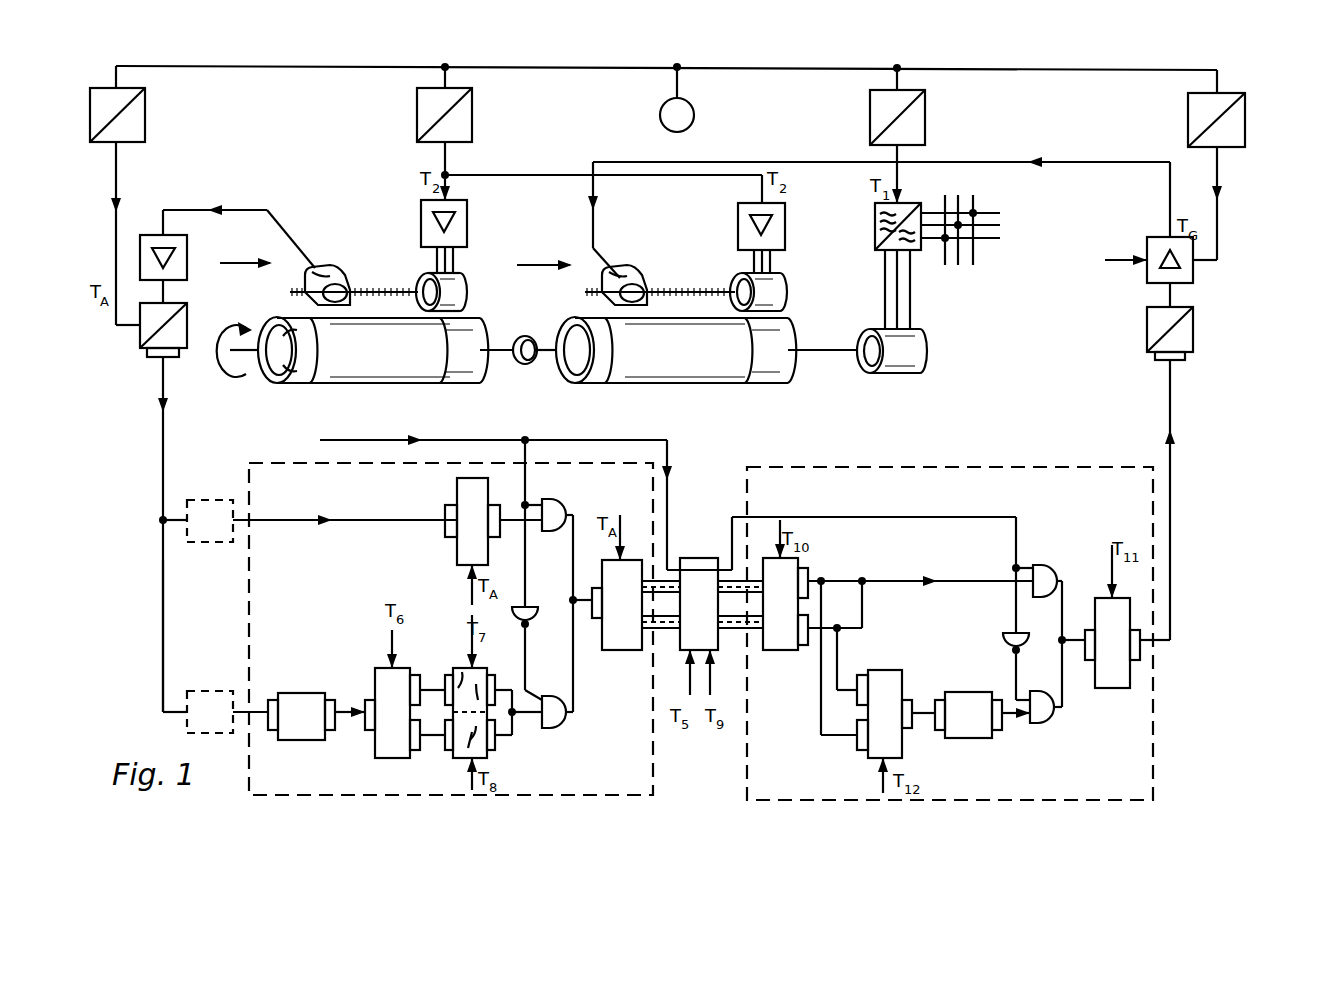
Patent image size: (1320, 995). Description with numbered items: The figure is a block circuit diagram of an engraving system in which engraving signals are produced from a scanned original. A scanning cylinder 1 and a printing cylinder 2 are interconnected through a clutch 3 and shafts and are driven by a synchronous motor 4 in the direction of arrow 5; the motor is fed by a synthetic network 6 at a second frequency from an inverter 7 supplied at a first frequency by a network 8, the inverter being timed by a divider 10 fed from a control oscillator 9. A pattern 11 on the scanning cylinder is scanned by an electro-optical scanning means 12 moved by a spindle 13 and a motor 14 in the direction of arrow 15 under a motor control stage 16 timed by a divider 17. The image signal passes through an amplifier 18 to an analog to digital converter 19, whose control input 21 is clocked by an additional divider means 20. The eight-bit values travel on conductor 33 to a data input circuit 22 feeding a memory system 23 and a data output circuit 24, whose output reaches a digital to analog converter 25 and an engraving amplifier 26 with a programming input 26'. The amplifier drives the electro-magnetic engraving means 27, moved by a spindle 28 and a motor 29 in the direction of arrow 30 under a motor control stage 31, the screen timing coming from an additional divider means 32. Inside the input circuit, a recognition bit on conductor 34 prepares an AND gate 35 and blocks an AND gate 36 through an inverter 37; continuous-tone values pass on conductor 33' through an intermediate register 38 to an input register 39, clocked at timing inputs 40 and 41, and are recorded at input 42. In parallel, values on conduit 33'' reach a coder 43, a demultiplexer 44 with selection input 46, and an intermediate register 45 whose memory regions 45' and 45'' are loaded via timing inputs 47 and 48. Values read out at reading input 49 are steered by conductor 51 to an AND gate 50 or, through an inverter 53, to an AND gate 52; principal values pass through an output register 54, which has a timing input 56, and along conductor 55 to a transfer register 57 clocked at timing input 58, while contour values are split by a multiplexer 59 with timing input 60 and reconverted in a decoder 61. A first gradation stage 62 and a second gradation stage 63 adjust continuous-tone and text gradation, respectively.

The scanning cylinder 1 is at (462, 378).
The printing cylinder 2 is at (766, 373).
The clutch 3 is at (524, 366).
The synchronous motor 4 is at (898, 373).
The arrow 5 is at (224, 354).
The synthetic network 6 is at (901, 288).
The inverter 7 is at (875, 232).
The network 8 is at (981, 200).
The control oscillator 9 is at (696, 106).
The divider 10 is at (918, 108).
The pattern 11 is at (340, 383).
The electro-optical scanning means 12 is at (324, 266).
The spindle 13 is at (375, 286).
The motor 14 is at (468, 290).
The arrow 15 is at (237, 262).
The motor control stage 16 is at (465, 217).
The divider 17 is at (468, 108).
The amplifier 18 is at (179, 255).
The analog to digital converter 19 is at (179, 313).
The additional divider means 20 is at (104, 157).
The control input 21 is at (137, 325).
The data input circuit 22 is at (622, 778).
The memory system 23 is at (696, 562).
The data output circuit 24 is at (977, 633).
The digital to analog converter 25 is at (1144, 332).
The engraving amplifier 26 is at (1143, 267).
The programming input 26' is at (1121, 231).
The electro-magnetic engraving means 27 is at (624, 260).
The spindle 28 is at (697, 276).
The motor 29 is at (786, 292).
The arrow 30 is at (537, 257).
The motor control stage 31 is at (738, 215).
The additional divider means 32 is at (1187, 122).
The conductor 33 is at (141, 534).
The conductor 33' is at (345, 502).
The conduit 33'' is at (139, 634).
The conductor 34 is at (379, 438).
The AND gate 35 is at (558, 515).
The AND gate 36 is at (564, 714).
The inverter 37 is at (528, 614).
The intermediate register 38 is at (456, 489).
The input register 39 is at (623, 645).
The timing input 40 is at (461, 565).
The timing input 41 is at (628, 548).
The input 42 is at (686, 666).
The coder 43 is at (310, 694).
The demultiplexer 44 is at (358, 760).
The intermediate register 45 is at (484, 701).
The memory region 45' is at (509, 753).
The memory region 45'' is at (448, 652).
The selection input 46 is at (390, 666).
The timing input 47 is at (478, 668).
The timing input 48 is at (470, 763).
The reading input 49 is at (714, 666).
The AND gate 50 is at (1046, 570).
The conductor 51 is at (957, 517).
The AND gate 52 is at (1044, 717).
The inverter 53 is at (1010, 638).
The output register 54 is at (792, 642).
The conductor 55 is at (897, 579).
The output register clock input 56 is at (780, 564).
The transfer register 57 is at (1115, 686).
The timing input 58 is at (1106, 599).
The multiplexer 59 is at (899, 745).
The timing input 60 is at (880, 768).
The decoder 61 is at (962, 691).
The first gradation stage 62 is at (198, 502).
The second gradation stage 63 is at (198, 694).